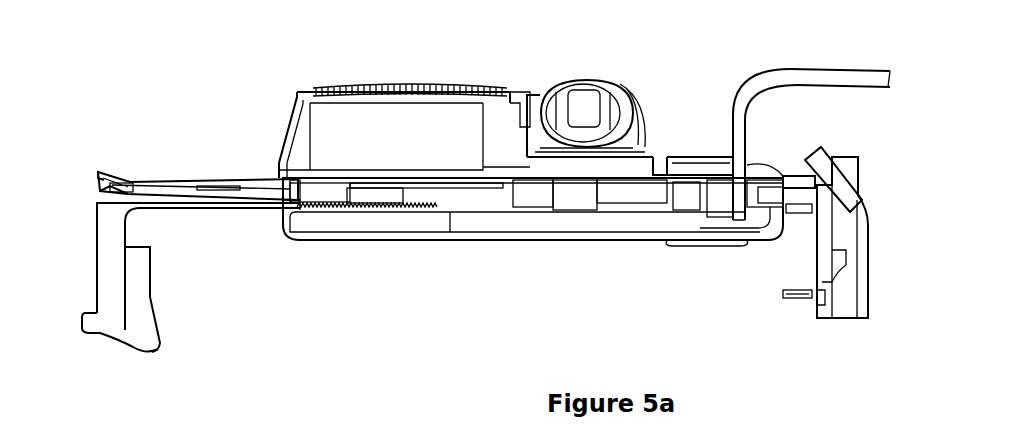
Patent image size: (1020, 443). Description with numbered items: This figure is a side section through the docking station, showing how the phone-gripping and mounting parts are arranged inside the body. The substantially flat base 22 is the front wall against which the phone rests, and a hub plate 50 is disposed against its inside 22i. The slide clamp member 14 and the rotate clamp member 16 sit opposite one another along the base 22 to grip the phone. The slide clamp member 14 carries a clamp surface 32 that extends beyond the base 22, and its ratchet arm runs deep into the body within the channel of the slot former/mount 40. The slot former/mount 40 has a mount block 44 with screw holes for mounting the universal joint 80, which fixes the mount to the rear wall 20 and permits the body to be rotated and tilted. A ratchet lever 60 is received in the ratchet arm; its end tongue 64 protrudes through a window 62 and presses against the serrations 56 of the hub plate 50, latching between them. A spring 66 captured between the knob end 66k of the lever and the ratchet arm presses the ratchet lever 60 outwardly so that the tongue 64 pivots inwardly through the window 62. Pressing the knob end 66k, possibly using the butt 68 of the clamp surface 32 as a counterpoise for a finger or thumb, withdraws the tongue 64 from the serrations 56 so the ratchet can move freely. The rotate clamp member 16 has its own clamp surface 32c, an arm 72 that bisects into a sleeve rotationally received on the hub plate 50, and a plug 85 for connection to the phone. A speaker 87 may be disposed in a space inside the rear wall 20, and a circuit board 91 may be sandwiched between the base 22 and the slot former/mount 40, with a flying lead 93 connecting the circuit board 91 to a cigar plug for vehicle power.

The slide clamp member 14 is at (97, 272).
The rotate clamp member 16 is at (847, 320).
The rear wall 20 is at (635, 84).
The base 22 is at (568, 242).
The inside of front wall 22i is at (318, 226).
The clamp surface 32 is at (147, 297).
The clamp surface 32c is at (810, 250).
The slot former/mount 40 is at (673, 210).
The mount block 44 is at (620, 152).
The hub plate 50 is at (463, 212).
The serrations 56 is at (403, 207).
The ratchet lever 60 is at (183, 181).
The window 62 is at (300, 200).
The end tongue 64 is at (295, 190).
The spring 66 is at (120, 181).
The knob end 66k is at (102, 176).
The butt 68 is at (107, 333).
The arm 72 is at (803, 190).
The universal joint 80 is at (584, 78).
The plug 85 is at (795, 298).
The speaker 87 is at (400, 108).
The circuit board 91 is at (650, 227).
The flying lead 93 is at (782, 75).